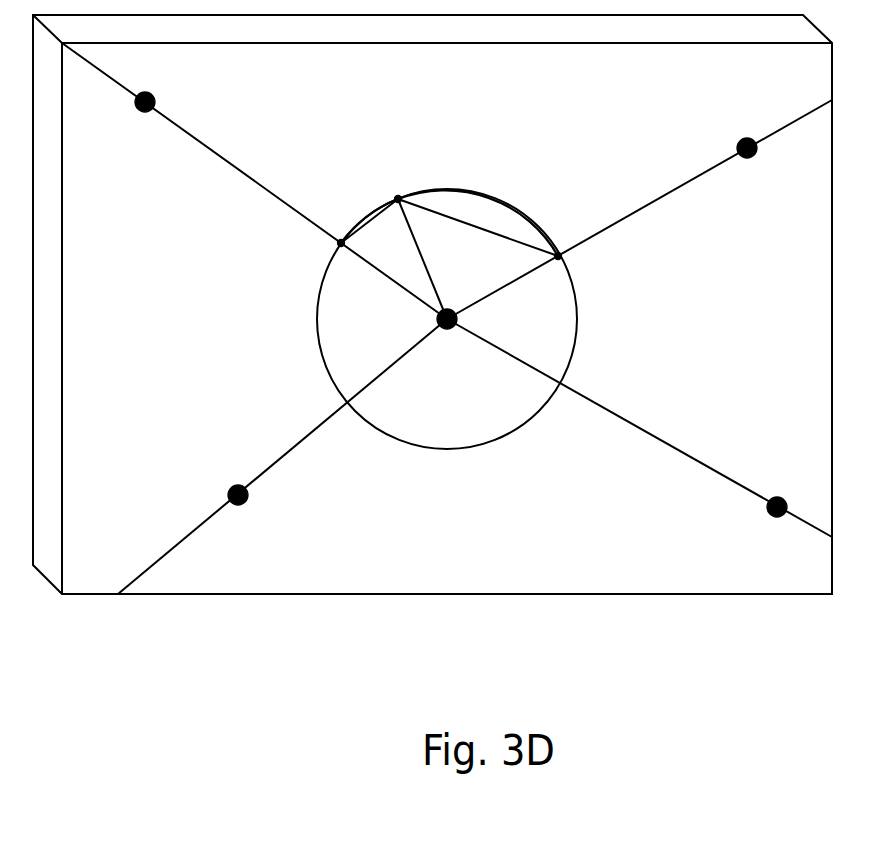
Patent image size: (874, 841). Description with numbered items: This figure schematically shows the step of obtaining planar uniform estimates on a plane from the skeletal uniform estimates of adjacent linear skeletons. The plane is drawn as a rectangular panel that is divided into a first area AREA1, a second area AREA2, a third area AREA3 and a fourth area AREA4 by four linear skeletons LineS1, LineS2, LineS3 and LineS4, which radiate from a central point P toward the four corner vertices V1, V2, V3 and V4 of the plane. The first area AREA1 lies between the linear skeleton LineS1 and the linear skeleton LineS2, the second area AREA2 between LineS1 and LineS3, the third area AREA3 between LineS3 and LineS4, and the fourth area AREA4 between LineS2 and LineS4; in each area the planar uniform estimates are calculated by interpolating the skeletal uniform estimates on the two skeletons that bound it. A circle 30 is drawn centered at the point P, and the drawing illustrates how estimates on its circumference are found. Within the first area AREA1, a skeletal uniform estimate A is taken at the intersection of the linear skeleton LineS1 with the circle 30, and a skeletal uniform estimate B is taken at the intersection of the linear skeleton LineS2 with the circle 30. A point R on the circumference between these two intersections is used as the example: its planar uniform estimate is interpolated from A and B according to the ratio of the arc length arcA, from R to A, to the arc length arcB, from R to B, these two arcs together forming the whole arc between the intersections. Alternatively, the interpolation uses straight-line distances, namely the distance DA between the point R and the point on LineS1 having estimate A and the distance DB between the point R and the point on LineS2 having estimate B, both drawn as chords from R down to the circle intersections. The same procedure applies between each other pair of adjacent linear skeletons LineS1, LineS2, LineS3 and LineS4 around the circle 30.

The circle 30 is at (530, 193).
The linear skeleton LineS1 is at (283, 163).
The linear skeleton LineS2 is at (646, 216).
The linear skeleton LineS3 is at (324, 442).
The linear skeleton LineS4 is at (665, 421).
The first vertex V1 is at (163, 97).
The second vertex V2 is at (751, 127).
The third vertex V3 is at (222, 481).
The fourth vertex V4 is at (792, 495).
The point P(x,y) P is at (487, 319).
The point R is at (417, 242).
The skeletal uniform estimate A is at (329, 249).
The skeletal uniform estimate B is at (573, 264).
The distance DA is at (369, 226).
The distance DB is at (478, 227).
The arc length A arcA is at (360, 216).
The arc length B arcB is at (478, 211).
The first area AREA1 is at (480, 73).
The second area AREA2 is at (116, 323).
The third area AREA3 is at (481, 563).
The fourth area AREA4 is at (780, 321).